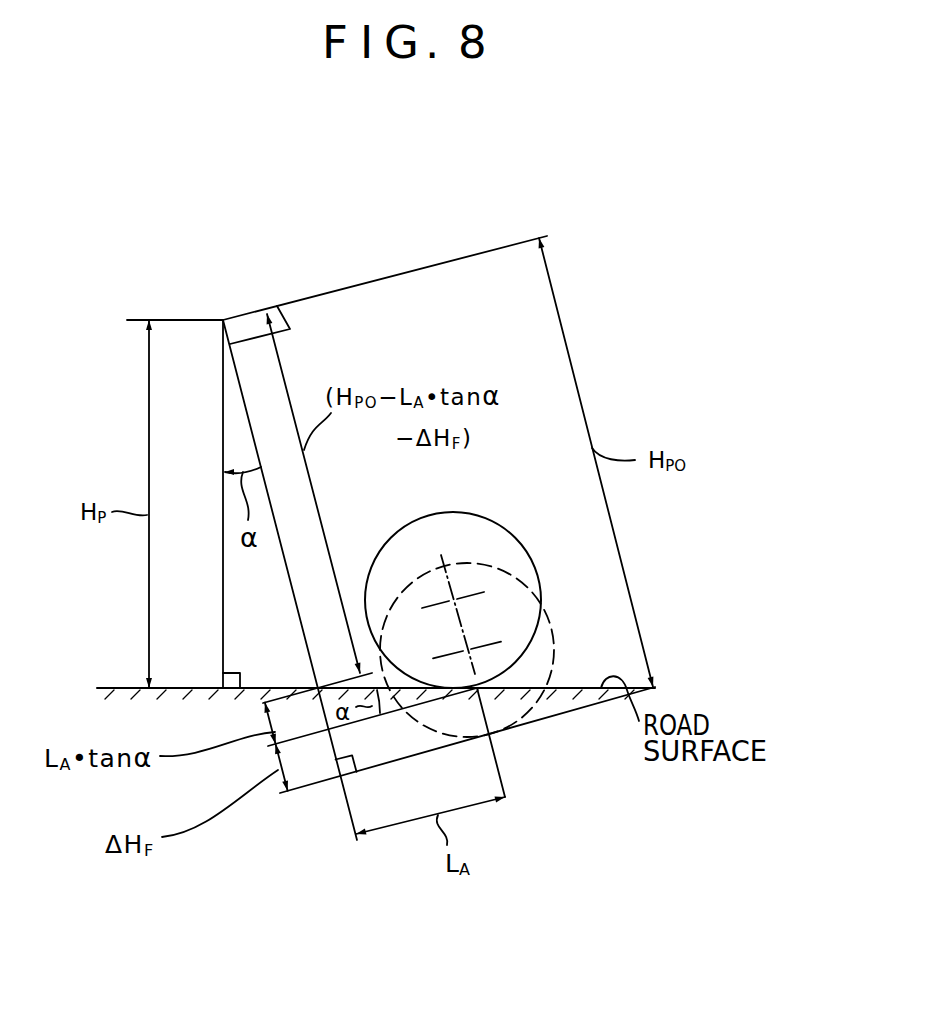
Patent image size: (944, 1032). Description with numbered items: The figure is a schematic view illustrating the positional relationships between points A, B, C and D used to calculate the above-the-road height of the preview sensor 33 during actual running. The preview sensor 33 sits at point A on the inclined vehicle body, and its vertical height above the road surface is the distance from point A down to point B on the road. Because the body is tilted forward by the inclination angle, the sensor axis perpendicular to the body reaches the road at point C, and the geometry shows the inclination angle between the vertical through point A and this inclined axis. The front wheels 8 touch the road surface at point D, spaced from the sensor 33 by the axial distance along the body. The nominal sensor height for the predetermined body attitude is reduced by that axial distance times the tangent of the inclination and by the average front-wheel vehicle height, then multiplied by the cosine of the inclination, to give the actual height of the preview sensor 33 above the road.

The preview sensor 33 is at (273, 307).
The front wheels 8 is at (532, 555).
The point A is at (223, 320).
The point B is at (223, 688).
The point C is at (318, 688).
The point D is at (478, 691).